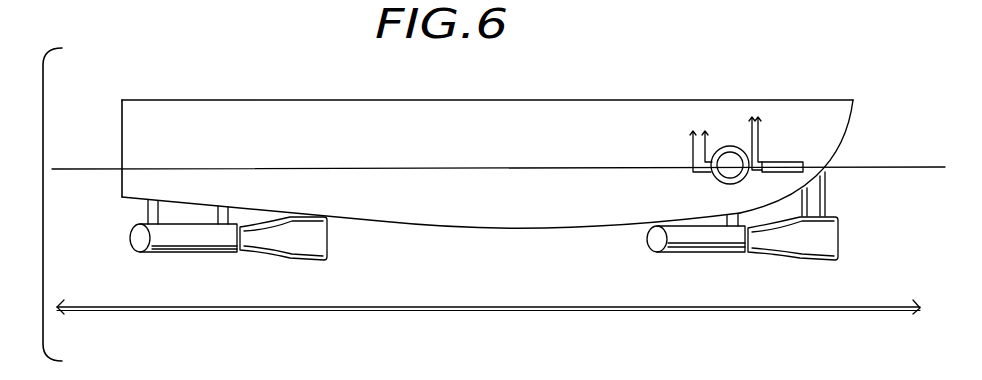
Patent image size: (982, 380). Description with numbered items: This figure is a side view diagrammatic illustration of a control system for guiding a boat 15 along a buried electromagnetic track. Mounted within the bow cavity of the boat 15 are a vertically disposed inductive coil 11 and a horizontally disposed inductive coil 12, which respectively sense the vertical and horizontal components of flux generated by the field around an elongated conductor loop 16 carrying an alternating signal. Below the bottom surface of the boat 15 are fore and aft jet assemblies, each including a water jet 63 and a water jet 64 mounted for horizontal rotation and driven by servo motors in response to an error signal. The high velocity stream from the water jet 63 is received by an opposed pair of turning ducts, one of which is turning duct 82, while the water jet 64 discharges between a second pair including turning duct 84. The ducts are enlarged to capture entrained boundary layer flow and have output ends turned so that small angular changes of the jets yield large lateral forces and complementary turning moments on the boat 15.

The boat 15 is at (596, 98).
The horizontally disposed inductive sensor or coil 12 is at (723, 180).
The vertically disposed inductive sensor or coil 11 is at (785, 163).
The turning duct 84 is at (193, 238).
The water jet 64 is at (295, 250).
The turning duct 82 is at (693, 243).
The water jet 63 is at (798, 247).
The conductor loop 16 is at (559, 310).